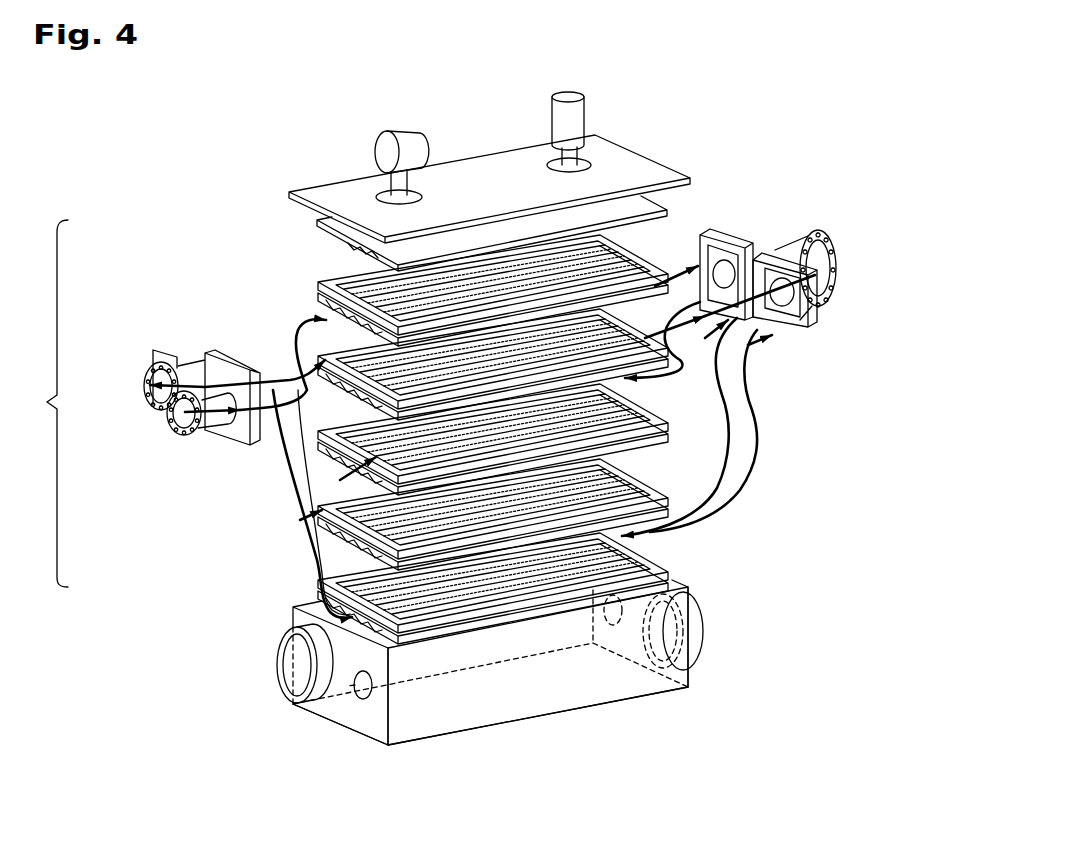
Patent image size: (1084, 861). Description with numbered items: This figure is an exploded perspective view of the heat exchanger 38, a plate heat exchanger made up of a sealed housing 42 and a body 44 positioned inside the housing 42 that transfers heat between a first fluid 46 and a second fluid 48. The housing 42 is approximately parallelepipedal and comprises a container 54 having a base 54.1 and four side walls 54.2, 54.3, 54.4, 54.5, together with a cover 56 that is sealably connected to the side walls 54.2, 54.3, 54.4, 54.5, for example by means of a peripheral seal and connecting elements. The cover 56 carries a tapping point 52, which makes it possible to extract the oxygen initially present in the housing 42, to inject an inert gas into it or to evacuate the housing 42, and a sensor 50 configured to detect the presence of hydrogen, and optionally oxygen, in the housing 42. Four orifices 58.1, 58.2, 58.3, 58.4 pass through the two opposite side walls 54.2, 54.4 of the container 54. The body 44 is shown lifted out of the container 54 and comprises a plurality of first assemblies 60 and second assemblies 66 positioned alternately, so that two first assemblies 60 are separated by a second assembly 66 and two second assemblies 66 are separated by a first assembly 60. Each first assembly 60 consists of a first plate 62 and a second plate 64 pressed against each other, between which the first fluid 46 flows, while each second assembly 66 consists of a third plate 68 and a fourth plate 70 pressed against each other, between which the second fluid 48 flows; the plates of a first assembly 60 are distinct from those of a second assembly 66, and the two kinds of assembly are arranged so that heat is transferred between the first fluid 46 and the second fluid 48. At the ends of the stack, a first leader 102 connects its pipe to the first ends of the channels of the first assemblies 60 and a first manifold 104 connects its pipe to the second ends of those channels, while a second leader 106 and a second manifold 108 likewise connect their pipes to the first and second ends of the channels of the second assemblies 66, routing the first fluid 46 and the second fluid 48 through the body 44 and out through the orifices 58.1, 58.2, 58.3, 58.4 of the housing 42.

The heat exchanger 38 is at (207, 165).
The housing 42 is at (650, 150).
The body 44 is at (40, 403).
The first fluid 46 is at (757, 404).
The second fluid 48 is at (722, 508).
The sensor 50 is at (381, 135).
The tapping point 52 is at (600, 106).
The container 54 is at (554, 678).
The base 54.1 is at (480, 732).
The side wall 54.2 is at (695, 591).
The side wall 54.3 is at (412, 695).
The side wall 54.4 is at (333, 698).
The side wall 54.5 is at (316, 598).
The cover 56 is at (493, 178).
The orifice 58.1 is at (705, 633).
The orifice 58.2 is at (620, 598).
The orifice 58.3 is at (282, 655).
The orifice 58.4 is at (358, 692).
The first assembly 60 is at (300, 333).
The first plate 62 is at (318, 294).
The second plate 64 is at (318, 362).
The second assembly 66 is at (296, 226).
The third plate 68 is at (310, 218).
The fourth plate 70 is at (318, 283).
The first leader 102 is at (813, 332).
The first manifold 104 is at (152, 342).
The second leader 106 is at (238, 452).
The second manifold 108 is at (762, 228).